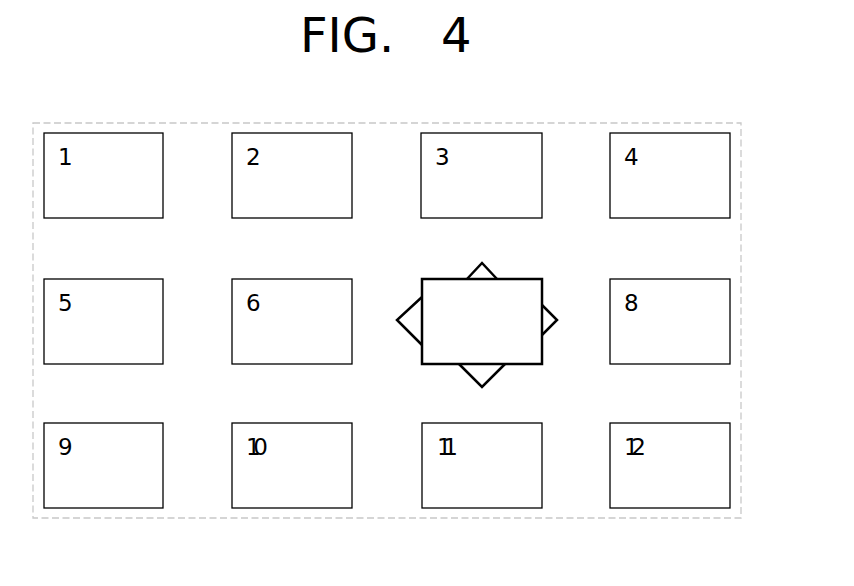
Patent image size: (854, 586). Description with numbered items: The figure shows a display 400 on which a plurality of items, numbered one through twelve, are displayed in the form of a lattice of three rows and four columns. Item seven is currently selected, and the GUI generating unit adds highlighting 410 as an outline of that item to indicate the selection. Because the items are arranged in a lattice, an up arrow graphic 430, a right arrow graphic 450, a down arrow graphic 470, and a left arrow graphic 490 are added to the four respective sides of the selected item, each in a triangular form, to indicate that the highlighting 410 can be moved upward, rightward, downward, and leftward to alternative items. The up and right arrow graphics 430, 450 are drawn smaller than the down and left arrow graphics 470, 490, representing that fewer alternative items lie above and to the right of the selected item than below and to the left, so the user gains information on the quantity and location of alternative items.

The display 400 is at (208, 103).
The highlighting 410 is at (448, 277).
The up arrow graphic 430 is at (490, 263).
The right arrow graphic 450 is at (549, 311).
The down arrow graphic 470 is at (485, 375).
The left arrow graphic 490 is at (413, 302).